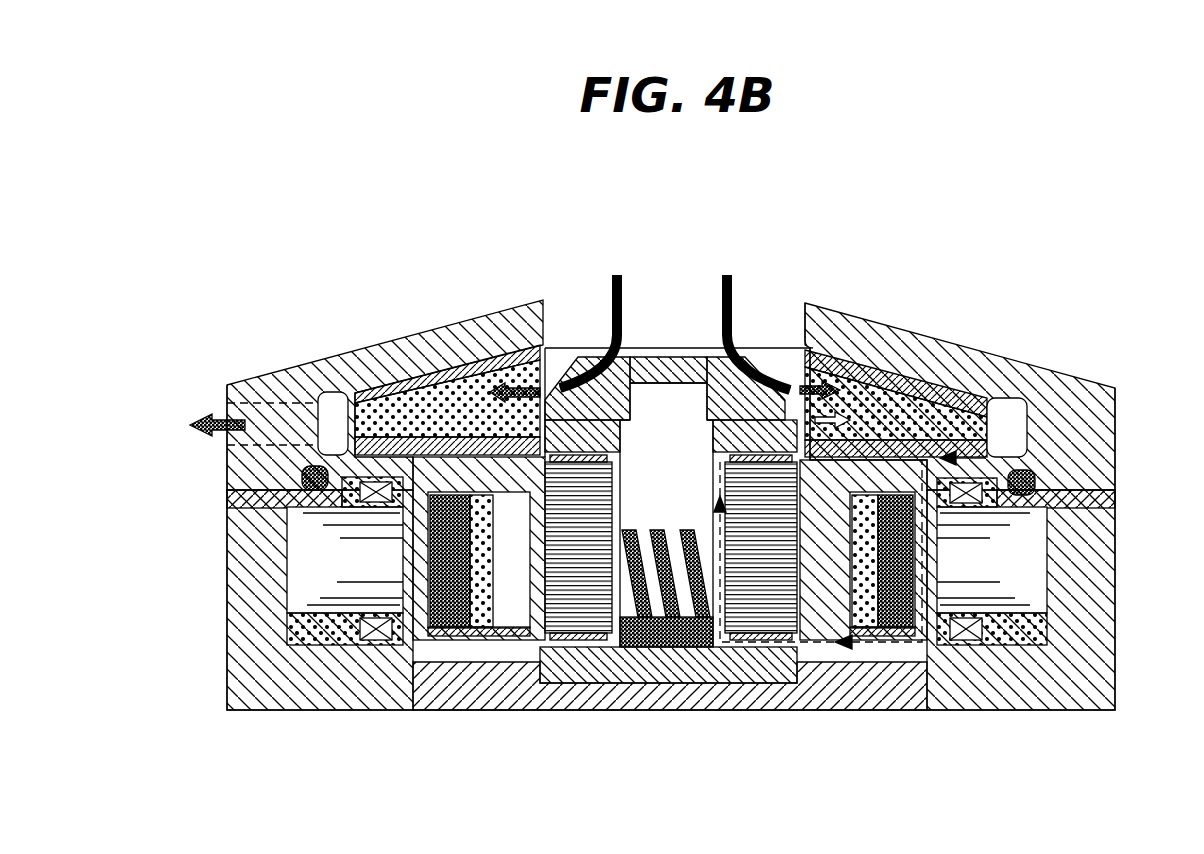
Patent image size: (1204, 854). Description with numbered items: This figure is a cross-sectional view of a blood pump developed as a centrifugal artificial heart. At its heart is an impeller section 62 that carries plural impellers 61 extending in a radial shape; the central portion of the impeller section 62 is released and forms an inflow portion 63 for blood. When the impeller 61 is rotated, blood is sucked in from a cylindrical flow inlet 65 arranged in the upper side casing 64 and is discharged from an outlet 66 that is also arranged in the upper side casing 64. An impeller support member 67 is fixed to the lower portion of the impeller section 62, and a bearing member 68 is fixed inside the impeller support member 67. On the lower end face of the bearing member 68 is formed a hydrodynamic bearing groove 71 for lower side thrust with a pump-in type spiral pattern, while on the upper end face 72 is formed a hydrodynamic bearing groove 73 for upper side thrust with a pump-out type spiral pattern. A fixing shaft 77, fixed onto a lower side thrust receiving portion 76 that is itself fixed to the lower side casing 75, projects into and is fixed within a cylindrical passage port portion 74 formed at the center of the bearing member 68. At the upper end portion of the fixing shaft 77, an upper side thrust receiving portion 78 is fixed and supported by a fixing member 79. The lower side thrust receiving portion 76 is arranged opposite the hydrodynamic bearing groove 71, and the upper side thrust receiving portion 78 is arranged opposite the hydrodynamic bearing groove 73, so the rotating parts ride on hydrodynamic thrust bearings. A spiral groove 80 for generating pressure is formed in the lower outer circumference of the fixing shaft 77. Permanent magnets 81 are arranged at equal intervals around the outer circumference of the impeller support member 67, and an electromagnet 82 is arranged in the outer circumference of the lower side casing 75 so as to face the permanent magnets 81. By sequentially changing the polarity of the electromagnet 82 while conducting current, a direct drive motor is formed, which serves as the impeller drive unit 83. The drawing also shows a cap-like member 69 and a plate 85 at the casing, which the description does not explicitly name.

The impeller 61 is at (987, 427).
The impeller section 62 is at (893, 380).
The inflow portion 63 is at (782, 458).
The upper side casing 64 is at (1088, 432).
The cylindrical flow inlet 65 is at (758, 328).
The outlet 66 is at (225, 400).
The impeller support member 67 is at (520, 585).
The bearing member 68 is at (605, 600).
The cap 69 is at (1022, 403).
The hydrodynamic bearing groove for lower side thrust 71 is at (557, 650).
The upper end face 72 is at (560, 400).
The hydrodynamic bearing groove for upper side thrust 73 is at (570, 455).
The cylindrical passage port portion 74 is at (697, 470).
The lower side casing 75 is at (826, 697).
The lower side thrust receiving portion 76 is at (640, 667).
The fixing shaft 77 is at (651, 460).
The upper side thrust receiving portion 78 is at (575, 430).
The fixing member 79 is at (645, 375).
The spiral groove 80 is at (675, 600).
The permanent magnet 81 is at (445, 603).
The electromagnet 82 is at (313, 575).
The impeller drive unit 83 is at (335, 400).
The plate 85 is at (1090, 506).